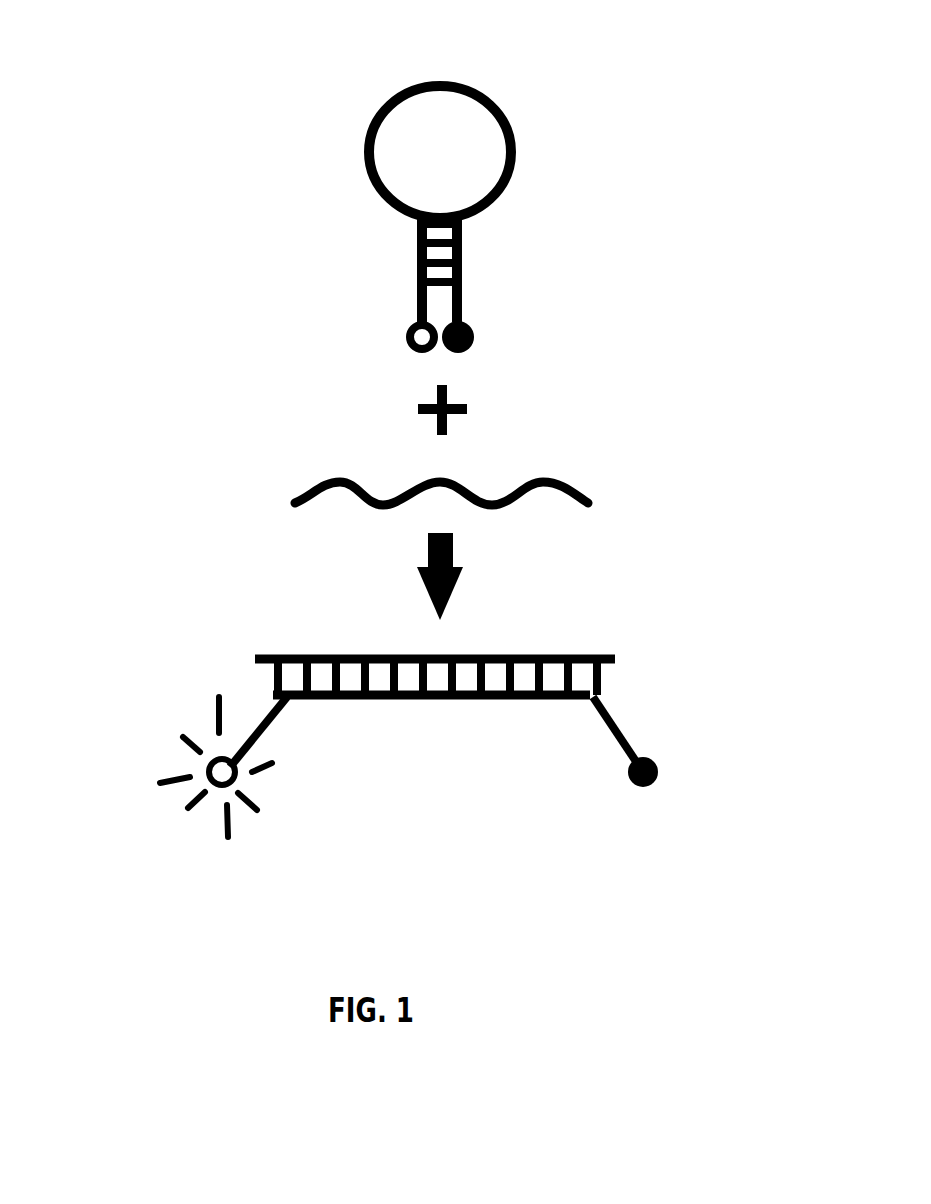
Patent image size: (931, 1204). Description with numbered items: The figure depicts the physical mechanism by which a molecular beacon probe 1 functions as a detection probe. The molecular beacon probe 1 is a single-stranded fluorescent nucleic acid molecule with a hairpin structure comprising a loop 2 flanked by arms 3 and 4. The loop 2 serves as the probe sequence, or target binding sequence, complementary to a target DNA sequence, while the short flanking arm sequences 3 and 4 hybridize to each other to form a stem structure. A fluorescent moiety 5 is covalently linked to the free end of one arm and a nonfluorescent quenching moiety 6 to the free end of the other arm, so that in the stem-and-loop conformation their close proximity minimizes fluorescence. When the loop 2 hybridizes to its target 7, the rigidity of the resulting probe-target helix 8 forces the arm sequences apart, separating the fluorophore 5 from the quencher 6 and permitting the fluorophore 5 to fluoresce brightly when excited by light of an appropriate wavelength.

The molecular beacon probe 1 is at (285, 128).
The loop 2 is at (493, 97).
The arm 3 is at (420, 270).
The arm 4 is at (460, 258).
The fluorescent moiety 5 is at (405, 336).
The nonfluorescent quenching moiety 6 is at (475, 335).
The target 7 is at (570, 488).
The probe-target helix 8 is at (226, 650).